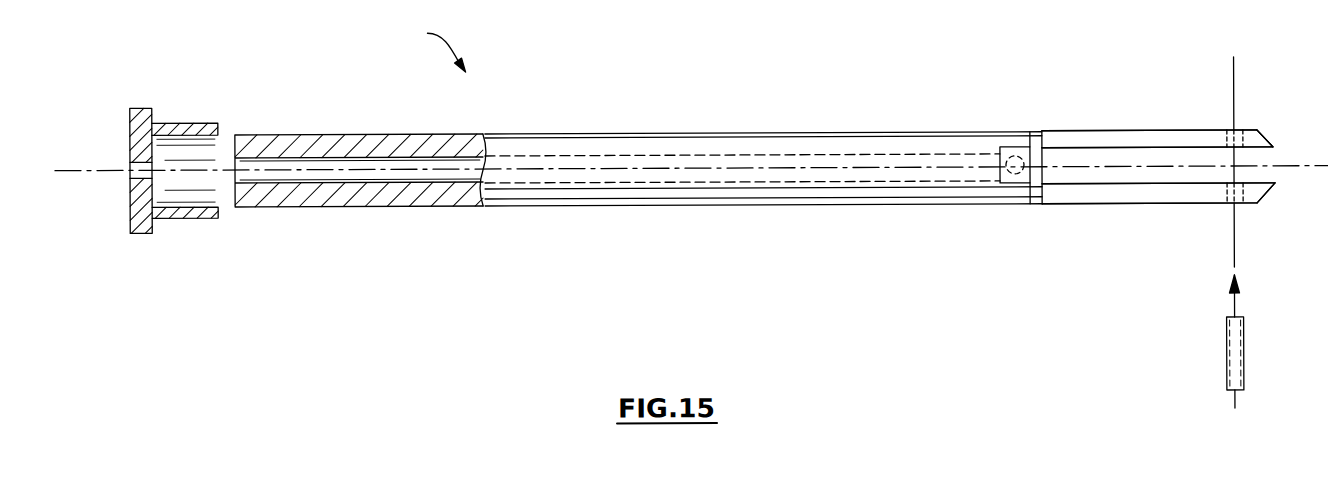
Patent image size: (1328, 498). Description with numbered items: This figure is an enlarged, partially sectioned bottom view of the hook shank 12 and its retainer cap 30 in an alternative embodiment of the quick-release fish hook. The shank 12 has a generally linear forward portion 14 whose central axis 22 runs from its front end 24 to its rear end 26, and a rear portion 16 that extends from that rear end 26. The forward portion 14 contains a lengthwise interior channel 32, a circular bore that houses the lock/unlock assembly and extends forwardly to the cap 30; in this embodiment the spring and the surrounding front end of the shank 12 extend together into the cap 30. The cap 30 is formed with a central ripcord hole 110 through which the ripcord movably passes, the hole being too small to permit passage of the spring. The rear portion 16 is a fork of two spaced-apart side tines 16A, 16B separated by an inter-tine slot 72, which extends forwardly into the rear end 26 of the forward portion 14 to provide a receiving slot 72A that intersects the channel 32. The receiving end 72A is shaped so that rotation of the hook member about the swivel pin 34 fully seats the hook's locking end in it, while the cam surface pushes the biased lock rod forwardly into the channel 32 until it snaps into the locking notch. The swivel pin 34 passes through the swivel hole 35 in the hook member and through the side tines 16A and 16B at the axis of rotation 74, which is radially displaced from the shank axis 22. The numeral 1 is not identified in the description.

The surgical instrument 1 is at (1270, 139).
The shank 12 is at (432, 45).
The forward portion 14 is at (596, 135).
The rear portion 16 is at (1093, 199).
The side tine 16A is at (1175, 196).
The side tine 16B is at (1183, 139).
The central axis 22 is at (335, 172).
The front end 24 is at (246, 194).
The rear end 26 is at (1048, 208).
The cap 30 is at (190, 214).
The interior channel 32 is at (394, 153).
The swivel pin 34 is at (1228, 354).
The swivel hole 35 is at (1250, 136).
The inter-tine slot 72 is at (1130, 150).
The receiving slot 72A is at (1027, 155).
The axis of rotation 74 is at (1238, 92).
The ripcord hole 110 is at (142, 160).